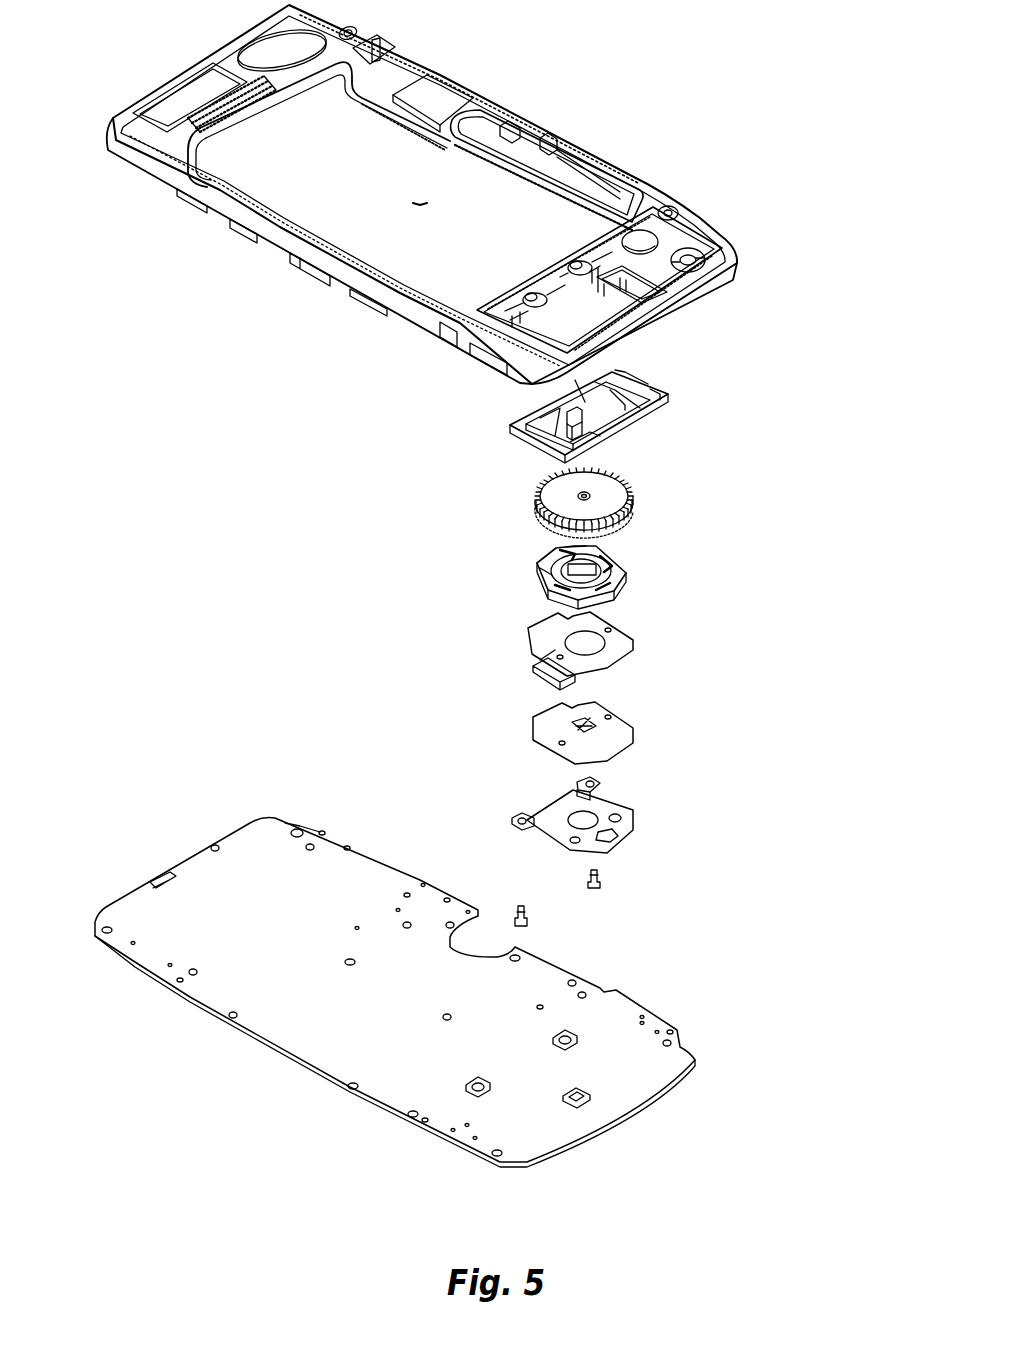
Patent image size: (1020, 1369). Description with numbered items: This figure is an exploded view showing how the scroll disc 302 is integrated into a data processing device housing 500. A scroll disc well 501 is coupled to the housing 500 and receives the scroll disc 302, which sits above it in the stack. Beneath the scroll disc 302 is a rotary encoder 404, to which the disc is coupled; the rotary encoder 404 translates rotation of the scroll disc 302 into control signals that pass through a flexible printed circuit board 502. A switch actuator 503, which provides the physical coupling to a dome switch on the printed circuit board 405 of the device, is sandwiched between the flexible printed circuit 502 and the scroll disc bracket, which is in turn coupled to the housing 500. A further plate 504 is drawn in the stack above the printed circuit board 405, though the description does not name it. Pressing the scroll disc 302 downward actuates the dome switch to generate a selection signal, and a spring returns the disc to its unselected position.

The data processing device housing 500 is at (703, 223).
The scroll disc well 501 is at (665, 399).
The scroll disc 302 is at (628, 497).
The rotary encoder 404 is at (620, 571).
The flexible printed circuit board 502 is at (628, 647).
The switch actuator 503 is at (628, 726).
The mounting plate 504 is at (628, 824).
The printed circuit board 405 is at (620, 1010).